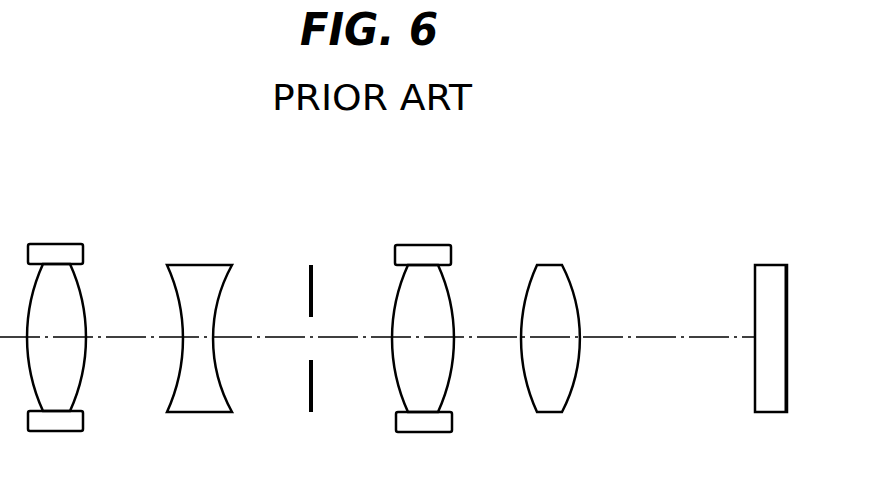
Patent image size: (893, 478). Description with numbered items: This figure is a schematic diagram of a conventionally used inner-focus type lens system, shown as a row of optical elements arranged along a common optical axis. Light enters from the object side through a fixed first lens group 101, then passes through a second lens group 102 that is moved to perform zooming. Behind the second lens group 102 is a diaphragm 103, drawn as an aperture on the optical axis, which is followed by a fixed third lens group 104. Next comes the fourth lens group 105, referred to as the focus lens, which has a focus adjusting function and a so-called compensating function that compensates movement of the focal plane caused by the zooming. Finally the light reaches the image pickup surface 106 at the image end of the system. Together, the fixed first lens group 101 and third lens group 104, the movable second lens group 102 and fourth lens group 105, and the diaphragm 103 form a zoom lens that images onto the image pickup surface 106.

The first lens group 101 is at (55, 244).
The second lens group 102 is at (200, 265).
The diaphragm 103 is at (311, 265).
The third lens group 104 is at (422, 245).
The fourth lens group (focus lens) 105 is at (547, 265).
The image pickup surface 106 is at (768, 265).